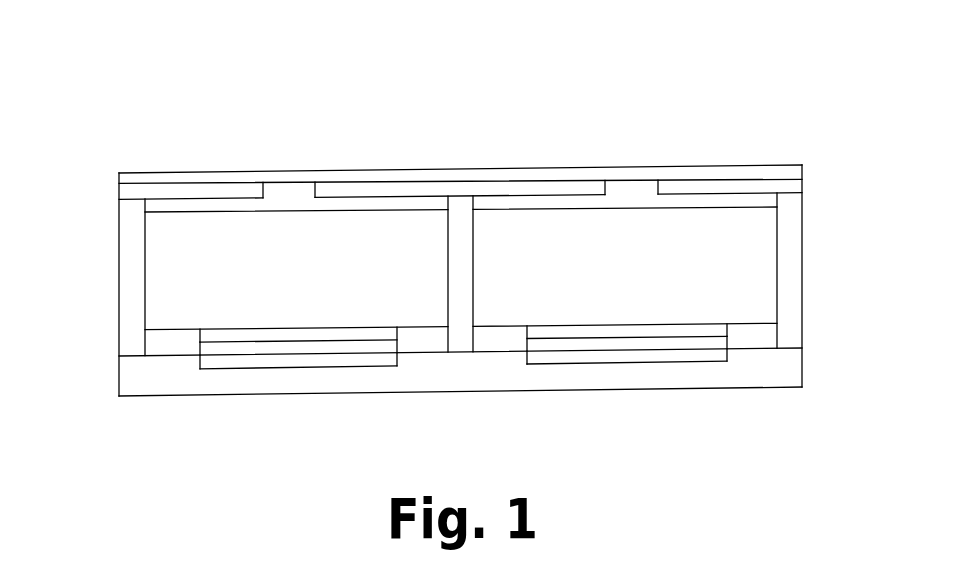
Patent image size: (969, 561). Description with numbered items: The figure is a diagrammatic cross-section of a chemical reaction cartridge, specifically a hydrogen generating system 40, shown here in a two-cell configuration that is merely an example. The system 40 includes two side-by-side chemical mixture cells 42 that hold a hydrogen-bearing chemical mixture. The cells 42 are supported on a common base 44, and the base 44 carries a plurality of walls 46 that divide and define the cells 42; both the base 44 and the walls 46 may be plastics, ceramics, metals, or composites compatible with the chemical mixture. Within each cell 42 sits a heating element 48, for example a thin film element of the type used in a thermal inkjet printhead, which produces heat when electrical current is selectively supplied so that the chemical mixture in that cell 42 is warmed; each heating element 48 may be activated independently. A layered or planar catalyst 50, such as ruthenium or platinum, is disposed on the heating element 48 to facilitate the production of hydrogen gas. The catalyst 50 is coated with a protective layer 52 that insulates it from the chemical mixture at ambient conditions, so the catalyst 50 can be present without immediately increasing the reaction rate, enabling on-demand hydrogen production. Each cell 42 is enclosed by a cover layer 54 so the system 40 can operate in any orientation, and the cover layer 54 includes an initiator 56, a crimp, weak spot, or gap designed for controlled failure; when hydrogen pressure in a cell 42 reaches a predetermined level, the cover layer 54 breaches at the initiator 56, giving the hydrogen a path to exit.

The hydrogen generating system 40 is at (697, 65).
The chemical mixture cell 42 is at (305, 278).
The base 44 is at (560, 375).
The wall 46 is at (135, 248).
The heating element 48 is at (285, 355).
The catalyst 50 is at (197, 345).
The protective layer 52 is at (226, 329).
The cover layer 54 is at (228, 181).
The initiator 56 is at (290, 190).